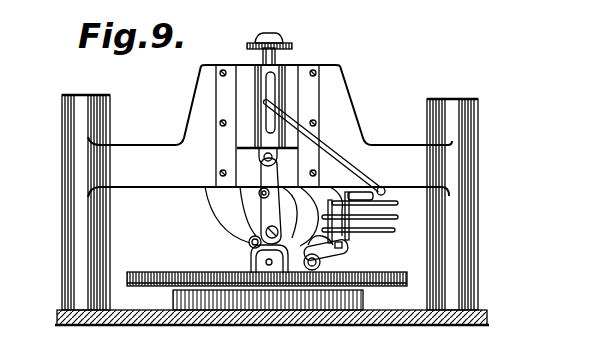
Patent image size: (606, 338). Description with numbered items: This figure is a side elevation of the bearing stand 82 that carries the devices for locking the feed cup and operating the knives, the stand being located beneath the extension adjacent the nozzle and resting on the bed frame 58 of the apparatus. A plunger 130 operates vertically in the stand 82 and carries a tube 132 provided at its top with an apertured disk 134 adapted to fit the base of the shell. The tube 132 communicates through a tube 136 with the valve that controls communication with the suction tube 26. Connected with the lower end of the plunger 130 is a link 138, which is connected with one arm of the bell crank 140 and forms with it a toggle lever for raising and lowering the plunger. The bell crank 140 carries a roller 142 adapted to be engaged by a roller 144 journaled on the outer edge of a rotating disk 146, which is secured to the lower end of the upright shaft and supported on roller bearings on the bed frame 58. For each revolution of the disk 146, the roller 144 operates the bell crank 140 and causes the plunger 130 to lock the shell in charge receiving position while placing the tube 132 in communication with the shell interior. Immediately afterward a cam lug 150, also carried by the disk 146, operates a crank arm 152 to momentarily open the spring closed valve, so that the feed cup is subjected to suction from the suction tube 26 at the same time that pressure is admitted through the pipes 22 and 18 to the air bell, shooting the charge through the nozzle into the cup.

The pipe 18 is at (399, 217).
The pipe 22 is at (396, 230).
The suction tube 26 is at (398, 203).
The bed frame 58 is at (486, 314).
The bearing stand 82 is at (110, 163).
The plunger 130 is at (247, 88).
The tube 132 is at (280, 60).
The apertured disk 134 is at (345, 29).
The tube 136 is at (334, 152).
The link 138 is at (262, 170).
The bell crank 140 is at (264, 210).
The roller 142 is at (251, 241).
The roller 144 is at (258, 260).
The rotating disk 146 is at (155, 273).
The cam lug 150 is at (340, 267).
The crank arm 152 is at (350, 258).